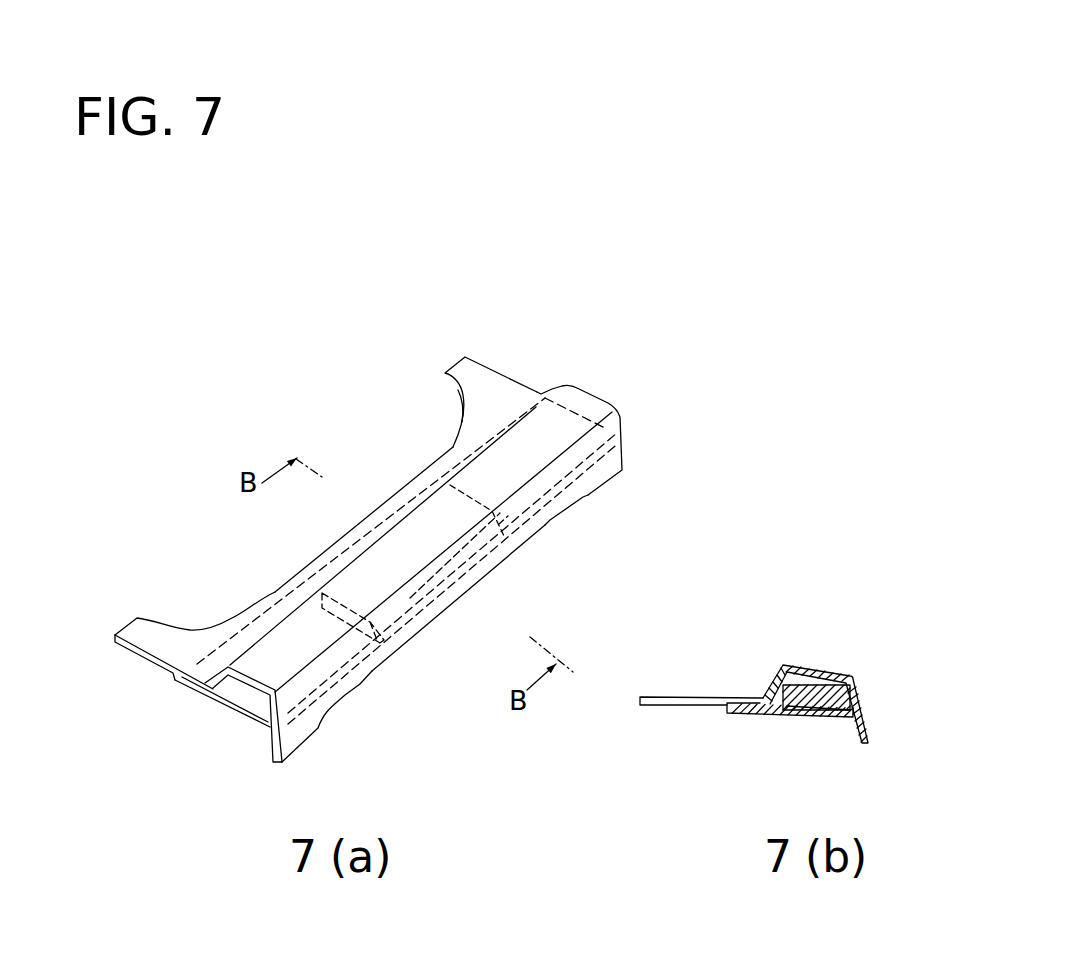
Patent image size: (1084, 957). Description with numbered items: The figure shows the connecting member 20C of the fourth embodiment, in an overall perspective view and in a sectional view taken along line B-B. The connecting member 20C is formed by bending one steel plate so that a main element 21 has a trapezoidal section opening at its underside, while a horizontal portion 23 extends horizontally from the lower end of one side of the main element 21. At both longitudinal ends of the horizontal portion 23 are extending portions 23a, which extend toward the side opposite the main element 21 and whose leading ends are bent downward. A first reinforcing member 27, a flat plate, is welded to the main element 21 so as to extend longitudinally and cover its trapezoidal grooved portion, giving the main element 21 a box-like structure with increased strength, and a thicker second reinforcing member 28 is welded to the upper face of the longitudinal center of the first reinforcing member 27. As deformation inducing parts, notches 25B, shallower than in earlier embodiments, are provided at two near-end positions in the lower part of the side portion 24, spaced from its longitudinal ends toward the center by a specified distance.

The connecting member 20C is at (372, 505).
The main element 21 is at (630, 431).
The horizontal portion 23 is at (303, 584).
The extending portions 23a is at (472, 372).
The side portion 24 is at (473, 591).
The notches 25B is at (550, 524).
The first reinforcing member 27 is at (215, 698).
The second reinforcing member 28 is at (410, 600).